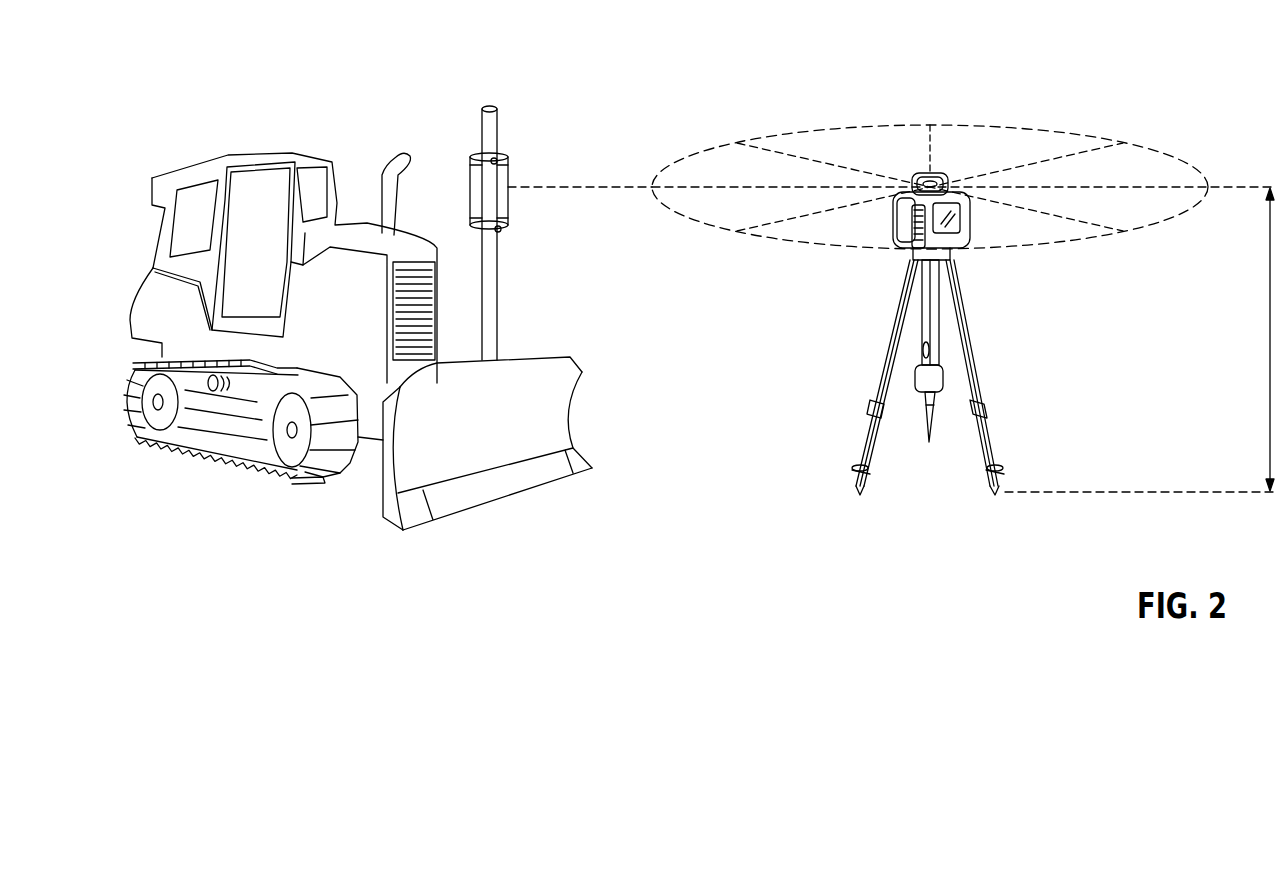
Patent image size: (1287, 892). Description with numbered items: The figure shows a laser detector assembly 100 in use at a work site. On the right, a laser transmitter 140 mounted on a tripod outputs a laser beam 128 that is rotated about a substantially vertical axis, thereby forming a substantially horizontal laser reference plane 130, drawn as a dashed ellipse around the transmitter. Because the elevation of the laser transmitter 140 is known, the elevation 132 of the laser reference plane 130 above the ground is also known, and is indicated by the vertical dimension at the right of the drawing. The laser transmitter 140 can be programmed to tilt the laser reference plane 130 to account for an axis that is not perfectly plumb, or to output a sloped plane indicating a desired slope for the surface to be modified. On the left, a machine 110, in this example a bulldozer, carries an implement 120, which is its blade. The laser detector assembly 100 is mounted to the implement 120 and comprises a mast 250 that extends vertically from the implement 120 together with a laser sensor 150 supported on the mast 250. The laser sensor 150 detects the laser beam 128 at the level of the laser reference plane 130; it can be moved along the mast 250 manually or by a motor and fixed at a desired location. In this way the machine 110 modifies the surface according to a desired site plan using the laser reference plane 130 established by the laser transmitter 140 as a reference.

The laser detector assembly 100 is at (535, 98).
The machine 110 is at (265, 140).
The implement 120 is at (548, 346).
The laser beam 128 is at (608, 168).
The laser reference plane 130 is at (1092, 125).
The elevation 132 is at (1262, 342).
The laser transmitter 140 is at (938, 170).
The laser sensor 150 is at (458, 155).
The mast 250 is at (505, 268).